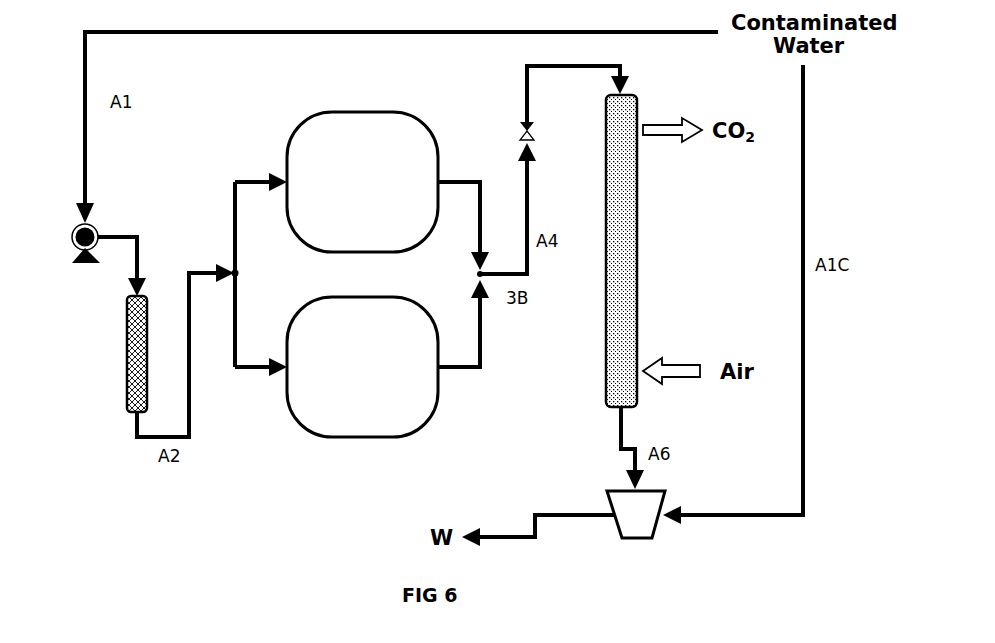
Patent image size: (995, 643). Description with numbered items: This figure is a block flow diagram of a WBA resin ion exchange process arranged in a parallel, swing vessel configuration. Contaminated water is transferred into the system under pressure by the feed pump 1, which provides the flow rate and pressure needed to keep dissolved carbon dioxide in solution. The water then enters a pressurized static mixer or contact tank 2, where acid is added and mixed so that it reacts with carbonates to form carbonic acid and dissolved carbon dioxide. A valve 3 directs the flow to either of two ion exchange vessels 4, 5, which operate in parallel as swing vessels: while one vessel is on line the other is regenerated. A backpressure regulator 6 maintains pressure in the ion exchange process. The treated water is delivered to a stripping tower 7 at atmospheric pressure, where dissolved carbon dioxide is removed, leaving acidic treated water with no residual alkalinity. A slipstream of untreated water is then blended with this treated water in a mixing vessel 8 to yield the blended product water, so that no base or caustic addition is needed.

The feed pump 1 is at (66, 236).
The pressurized static mixer or contact tank 2 is at (153, 351).
The valve 3 is at (244, 273).
The ion exchange vessel 4 is at (359, 108).
The ion exchange vessel 5 is at (359, 441).
The backpressure regulator 6 is at (519, 125).
The stripping tower 7 is at (601, 251).
The mixing vessel 8 is at (644, 544).